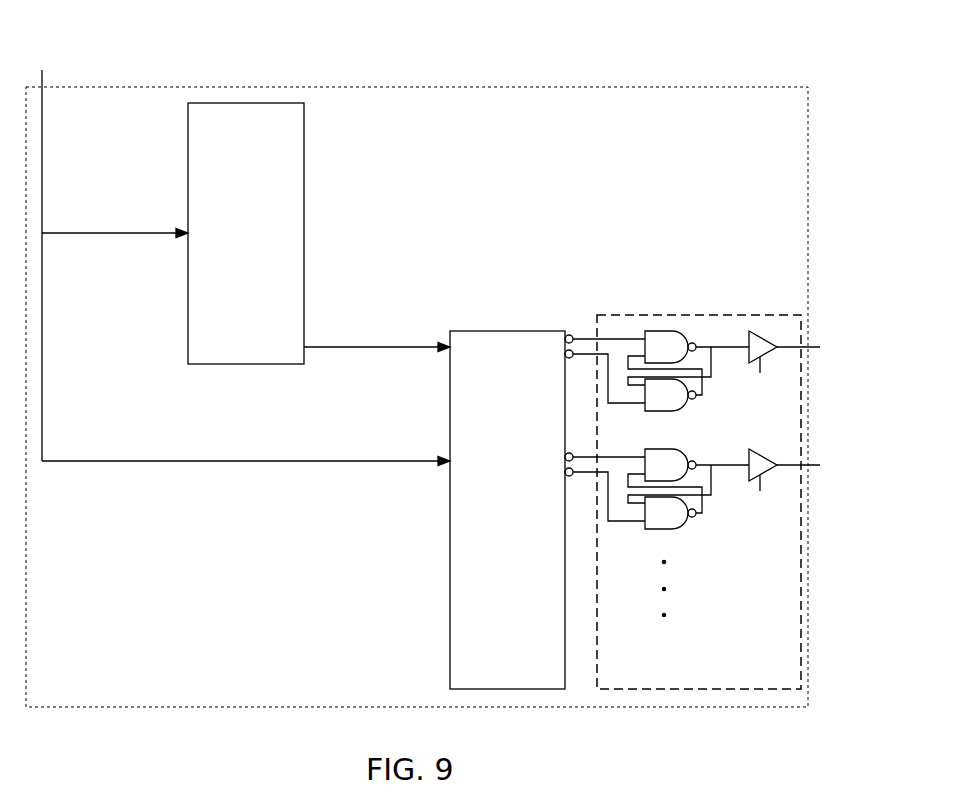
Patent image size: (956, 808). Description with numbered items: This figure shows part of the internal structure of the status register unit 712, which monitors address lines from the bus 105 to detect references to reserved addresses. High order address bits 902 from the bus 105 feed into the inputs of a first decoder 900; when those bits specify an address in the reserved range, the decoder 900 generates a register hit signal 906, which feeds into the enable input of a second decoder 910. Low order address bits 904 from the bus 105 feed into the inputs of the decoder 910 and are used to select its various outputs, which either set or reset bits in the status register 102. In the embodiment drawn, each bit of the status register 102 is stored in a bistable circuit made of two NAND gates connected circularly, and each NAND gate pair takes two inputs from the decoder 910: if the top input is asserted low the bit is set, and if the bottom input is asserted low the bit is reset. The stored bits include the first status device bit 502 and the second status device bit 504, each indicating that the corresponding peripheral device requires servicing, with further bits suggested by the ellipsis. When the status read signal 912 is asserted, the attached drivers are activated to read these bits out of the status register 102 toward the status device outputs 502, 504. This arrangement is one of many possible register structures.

The bus 105 is at (43, 242).
The status register unit 712 is at (808, 87).
The high order address bits 902 is at (115, 192).
The decoder 900 is at (246, 233).
The register hit signal 906 is at (377, 324).
The low order address bits 904 is at (246, 439).
The decoder 910 is at (511, 510).
The status register 102 is at (597, 315).
The status read signal 912 is at (763, 446).
The status device 1 502 is at (836, 345).
The status device 2 504 is at (836, 463).